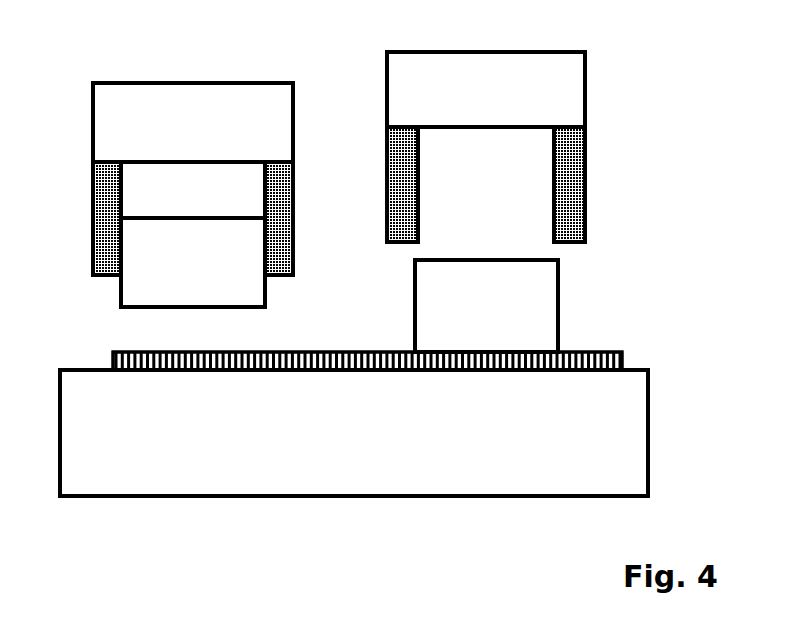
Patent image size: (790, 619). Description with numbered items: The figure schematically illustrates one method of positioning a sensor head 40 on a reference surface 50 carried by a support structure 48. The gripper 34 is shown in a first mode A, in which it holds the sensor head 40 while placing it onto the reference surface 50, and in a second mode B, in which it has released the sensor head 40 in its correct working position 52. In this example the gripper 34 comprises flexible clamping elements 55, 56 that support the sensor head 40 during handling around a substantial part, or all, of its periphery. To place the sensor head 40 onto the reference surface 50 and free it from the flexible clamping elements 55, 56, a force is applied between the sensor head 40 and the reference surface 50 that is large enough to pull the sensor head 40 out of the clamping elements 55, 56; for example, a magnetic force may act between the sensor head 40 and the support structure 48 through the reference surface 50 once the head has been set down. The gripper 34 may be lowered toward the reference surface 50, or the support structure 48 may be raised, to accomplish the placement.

The gripper 34 is at (148, 98).
The flexible clamping element 55 is at (92, 196).
The flexible clamping element 56 is at (262, 191).
The sensor head 40 is at (140, 287).
The working position 52 is at (185, 352).
The reference surface 50 is at (612, 351).
The support structure 48 is at (140, 480).